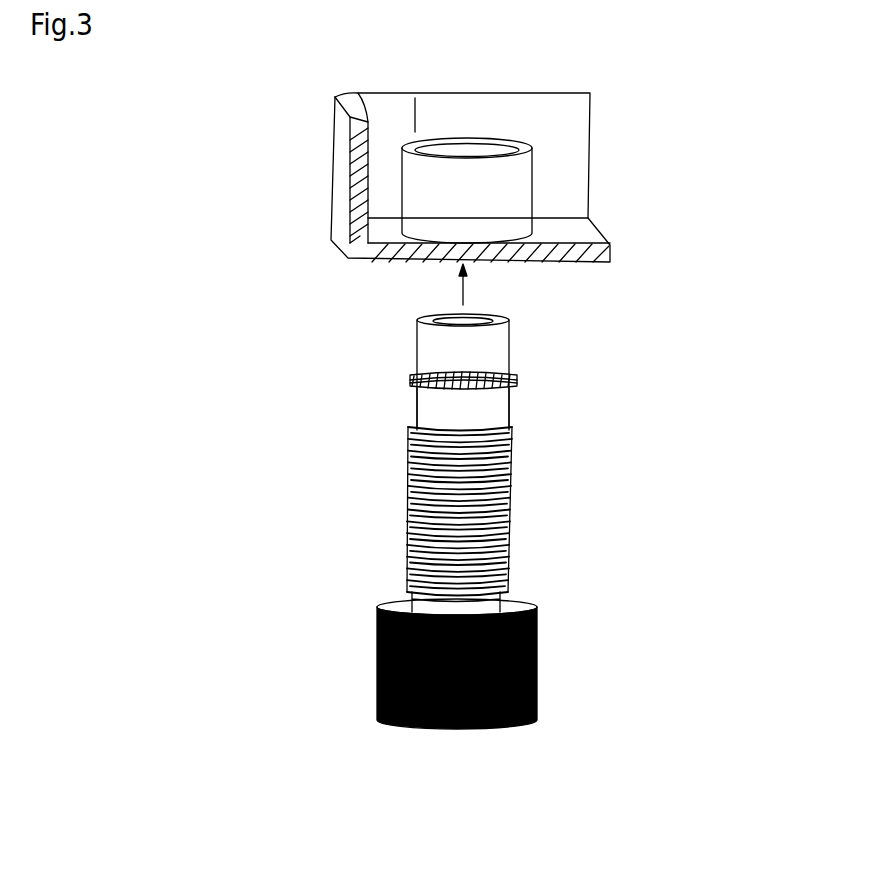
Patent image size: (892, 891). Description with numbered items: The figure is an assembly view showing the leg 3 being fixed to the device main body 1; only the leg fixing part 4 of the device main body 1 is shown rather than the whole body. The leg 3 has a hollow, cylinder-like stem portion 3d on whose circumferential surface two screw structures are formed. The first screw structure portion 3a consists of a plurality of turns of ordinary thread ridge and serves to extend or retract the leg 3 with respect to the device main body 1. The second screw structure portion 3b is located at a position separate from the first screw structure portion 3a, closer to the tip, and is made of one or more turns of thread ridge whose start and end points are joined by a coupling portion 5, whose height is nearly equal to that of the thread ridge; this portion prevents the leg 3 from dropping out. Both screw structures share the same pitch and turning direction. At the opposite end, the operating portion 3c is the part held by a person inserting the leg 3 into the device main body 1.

The device main body 1 is at (341, 170).
The leg fixing part 4 is at (502, 188).
The leg 3 is at (497, 521).
The first screw structure portion 3a is at (378, 430).
The second screw structure portion 3b is at (452, 393).
The operating portion 3c is at (377, 662).
The stem portion 3d is at (500, 347).
The coupling portion 5 is at (412, 377).